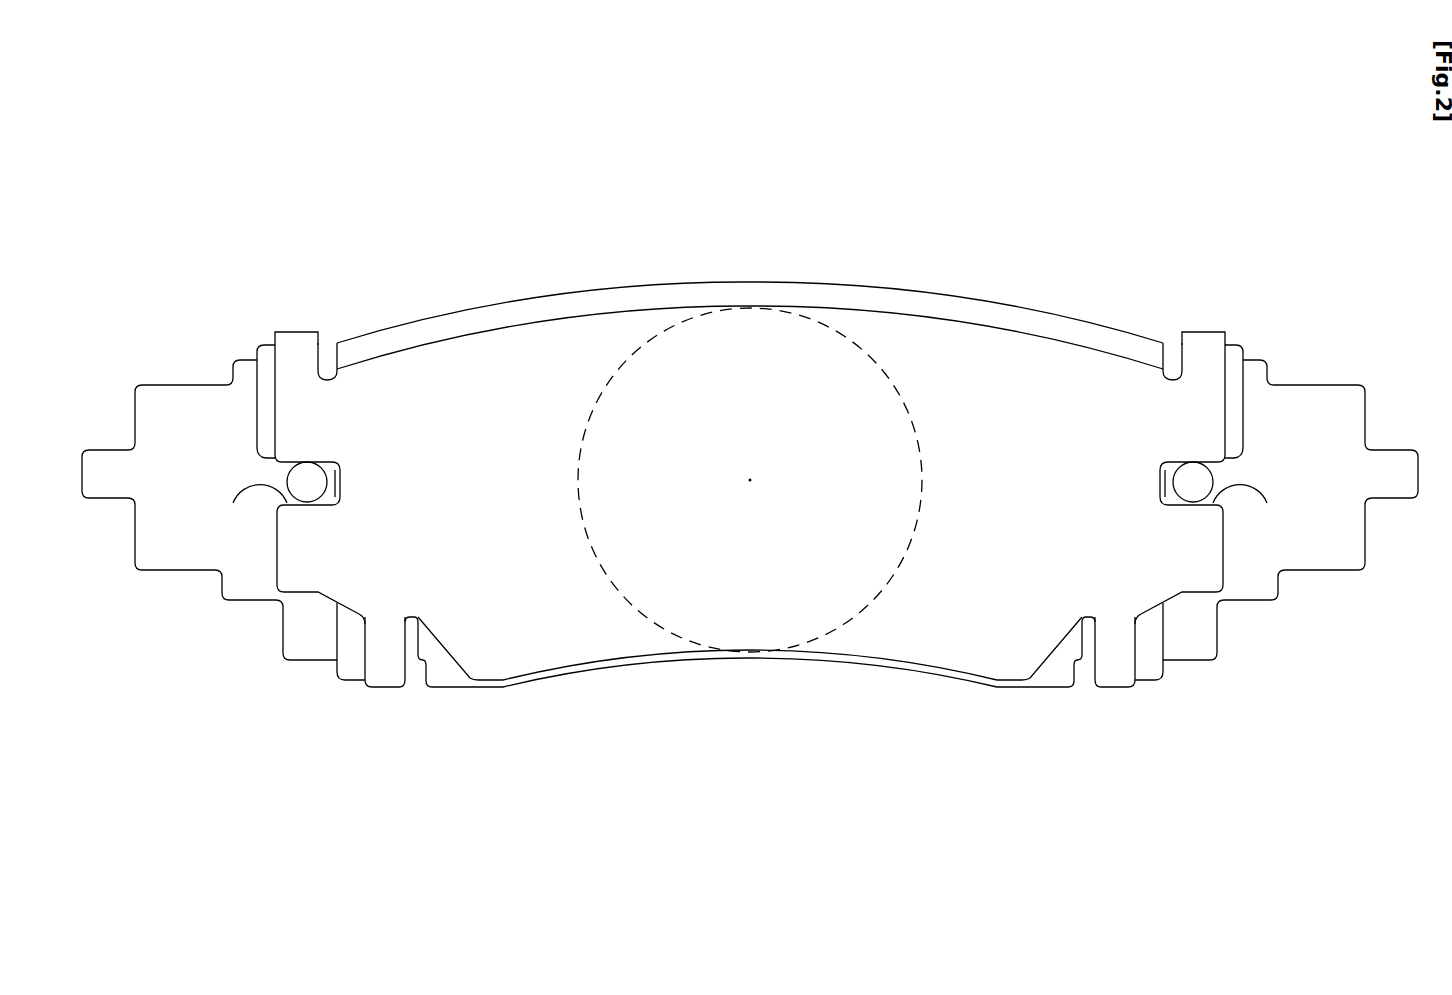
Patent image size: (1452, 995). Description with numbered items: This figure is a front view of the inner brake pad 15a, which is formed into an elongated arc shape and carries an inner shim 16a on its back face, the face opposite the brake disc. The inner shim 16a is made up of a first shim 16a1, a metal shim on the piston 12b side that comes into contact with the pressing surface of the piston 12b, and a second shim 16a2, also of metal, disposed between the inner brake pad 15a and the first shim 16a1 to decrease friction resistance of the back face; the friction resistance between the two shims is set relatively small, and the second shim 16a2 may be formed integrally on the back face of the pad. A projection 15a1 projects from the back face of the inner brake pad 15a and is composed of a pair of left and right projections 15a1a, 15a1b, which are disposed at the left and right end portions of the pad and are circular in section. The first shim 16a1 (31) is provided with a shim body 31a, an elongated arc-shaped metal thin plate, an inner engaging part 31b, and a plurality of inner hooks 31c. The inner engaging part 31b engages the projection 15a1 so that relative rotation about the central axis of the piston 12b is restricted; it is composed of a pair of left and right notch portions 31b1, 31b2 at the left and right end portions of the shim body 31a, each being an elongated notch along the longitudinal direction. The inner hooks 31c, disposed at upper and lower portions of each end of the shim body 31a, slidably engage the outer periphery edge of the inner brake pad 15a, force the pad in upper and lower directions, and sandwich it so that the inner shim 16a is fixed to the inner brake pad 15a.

The piston 12b is at (825, 632).
The inner brake pad 15a is at (922, 288).
The projection 15a1 is at (759, 397).
The left projection 15a1a is at (216, 412).
The right projection 15a1b is at (1293, 412).
The inner shim 16a is at (756, 298).
The first shim 16a1 is at (750, 459).
The second shim 16a2 is at (1237, 345).
The first shim 31 is at (1043, 352).
The shim body 31a is at (512, 338).
The inner engaging part 31b is at (757, 585).
The left notch portion 31b1 is at (194, 586).
The right notch portion 31b2 is at (1312, 586).
The inner hooks 31c is at (297, 332).